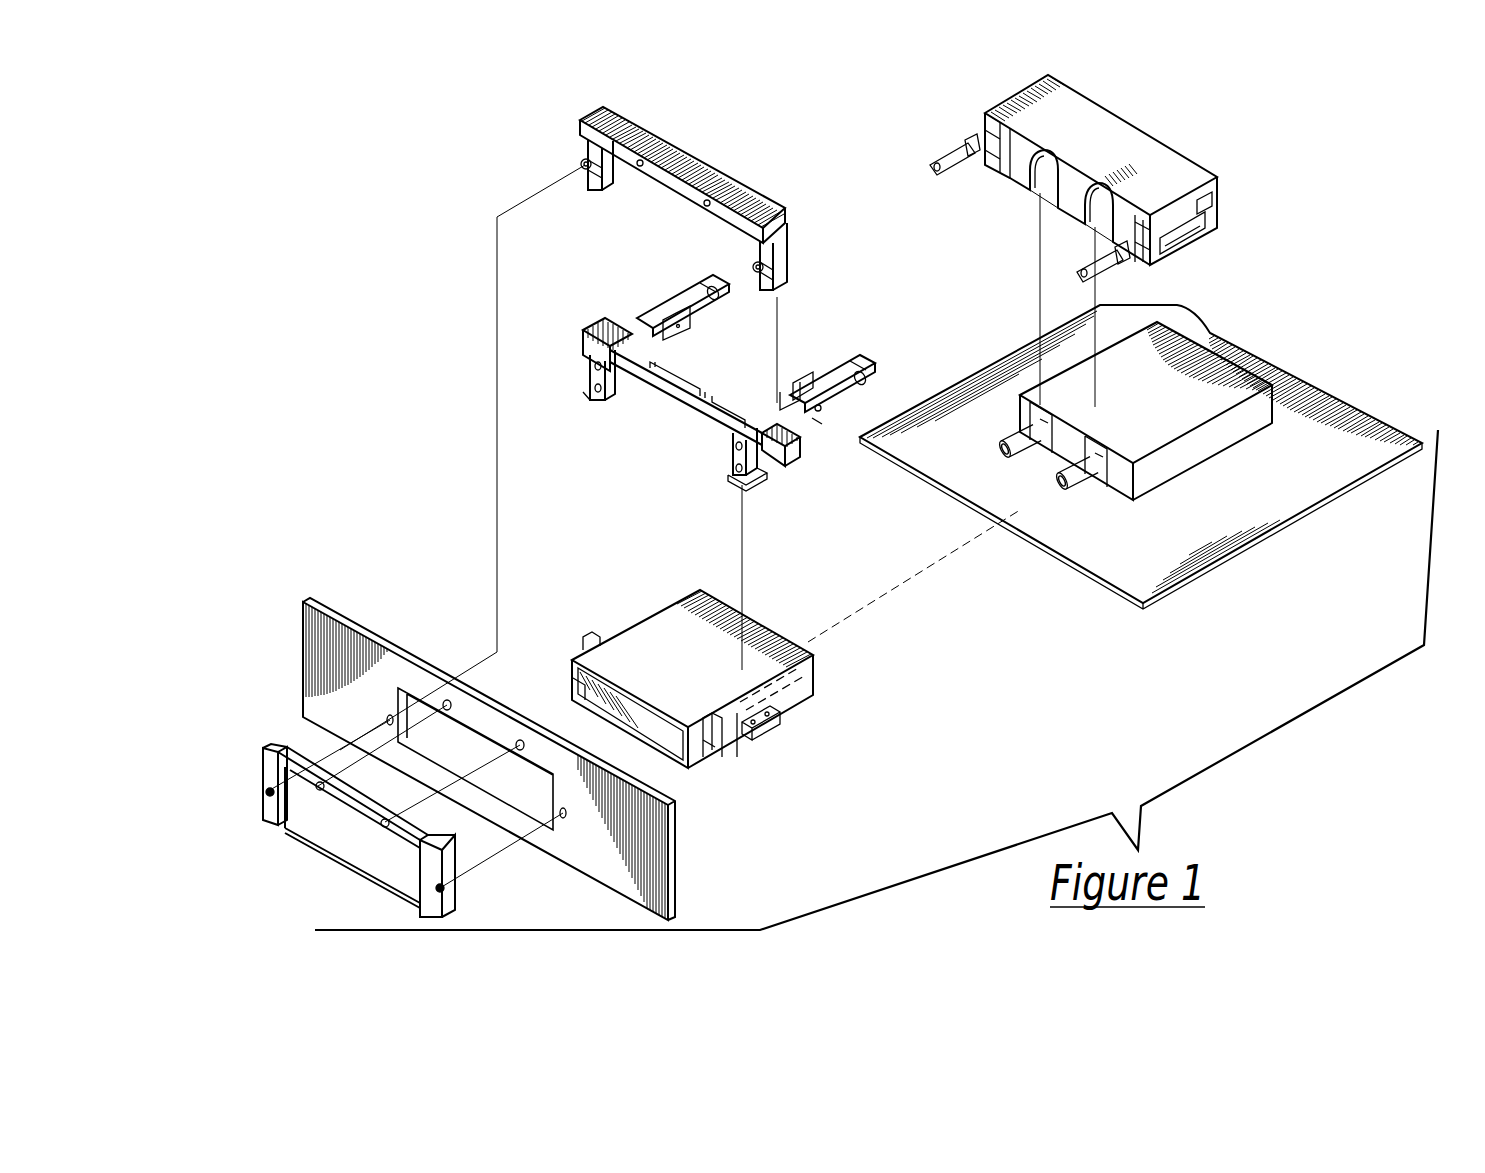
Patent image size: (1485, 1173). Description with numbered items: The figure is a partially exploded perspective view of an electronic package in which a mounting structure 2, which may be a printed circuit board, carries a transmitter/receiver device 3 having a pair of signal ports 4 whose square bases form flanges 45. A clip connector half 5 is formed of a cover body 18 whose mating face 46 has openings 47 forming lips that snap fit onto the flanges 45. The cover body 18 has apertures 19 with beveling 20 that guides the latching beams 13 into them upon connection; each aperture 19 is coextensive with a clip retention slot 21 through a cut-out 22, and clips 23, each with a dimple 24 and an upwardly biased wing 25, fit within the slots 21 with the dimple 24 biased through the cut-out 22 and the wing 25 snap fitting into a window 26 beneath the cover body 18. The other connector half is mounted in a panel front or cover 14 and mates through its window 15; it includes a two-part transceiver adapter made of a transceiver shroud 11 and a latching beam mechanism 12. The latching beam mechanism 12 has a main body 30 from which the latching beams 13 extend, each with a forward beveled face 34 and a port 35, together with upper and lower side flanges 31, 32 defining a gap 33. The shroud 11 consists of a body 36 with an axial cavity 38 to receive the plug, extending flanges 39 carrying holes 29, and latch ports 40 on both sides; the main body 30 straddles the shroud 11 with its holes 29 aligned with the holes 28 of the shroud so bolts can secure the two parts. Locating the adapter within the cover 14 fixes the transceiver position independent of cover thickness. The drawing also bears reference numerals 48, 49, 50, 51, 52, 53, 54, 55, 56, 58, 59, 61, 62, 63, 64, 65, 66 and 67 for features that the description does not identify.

The mounting structure 2 is at (1302, 395).
The transmitter/receiver device 3 is at (1237, 447).
The signal ports 4 is at (1052, 484).
The clip connector half 5 is at (716, 502).
The transceiver shroud 11 is at (720, 687).
The latching beam mechanism 12 is at (722, 393).
The latching beams 13 is at (668, 309).
The panel front or cover 14 is at (441, 759).
The window 15 is at (507, 782).
The cover body 18 is at (1105, 185).
The apertures 19 is at (1000, 166).
The beveling 20 is at (985, 151).
The clip retention slot 21 is at (1190, 225).
The cut-out 22 is at (1177, 248).
The clips 23 is at (1016, 204).
The dimple 24 is at (933, 173).
The wing 25 is at (966, 141).
The window 26 is at (1215, 208).
The holes 28 is at (707, 748).
The holes 29 is at (622, 375).
The main body 30 is at (678, 377).
The upper flange 31 is at (583, 341).
The lower flange 32 is at (589, 394).
The gap 33 is at (594, 370).
The forward beveled face 34 is at (727, 288).
The port 35 is at (708, 291).
The body 36 is at (760, 621).
The axial cavity 38 is at (637, 707).
The extending flanges 39 is at (592, 636).
The latch ports 40 is at (575, 691).
The flanges 45 is at (1044, 431).
The mating face 46 is at (1065, 200).
The openings 47 is at (1040, 179).
The support bar 48 is at (689, 187).
The bar top surface 49 is at (662, 146).
The bar holes 50 is at (588, 142).
The leg slots 51 is at (582, 167).
The bar legs 52 is at (608, 172).
The bezel 53 is at (345, 826).
The left post 54 is at (263, 748).
The right post 55 is at (422, 913).
The bezel window 56 is at (358, 874).
The bezel holes 58 is at (385, 827).
The panel holes 59 is at (447, 699).
The bezel pegs 61 is at (260, 775).
The panel peg holes 62 is at (474, 774).
The bolts 63 is at (585, 170).
The arm block 64 is at (790, 393).
The arm clips 65 is at (800, 387).
The detent 66 is at (825, 405).
The arm base 67 is at (812, 434).